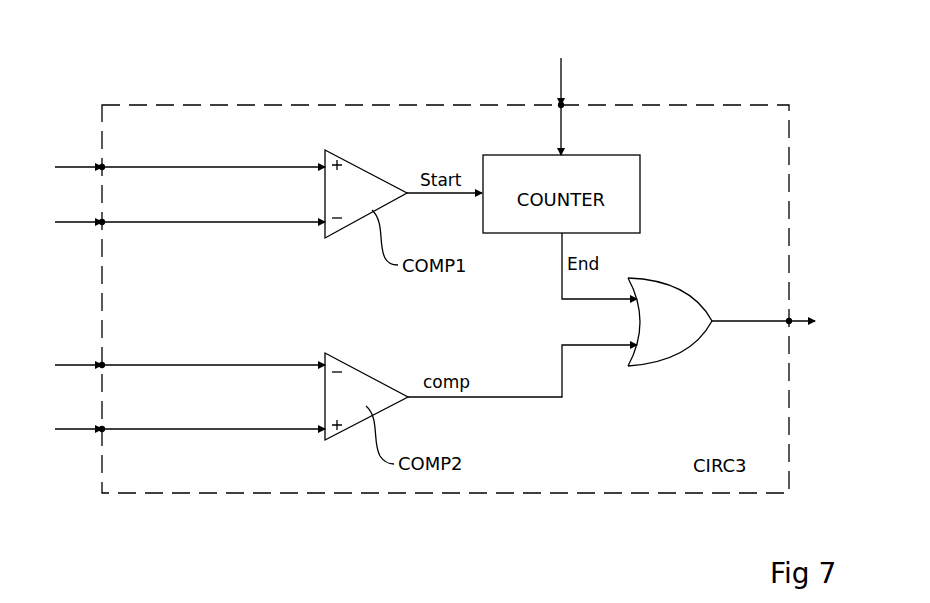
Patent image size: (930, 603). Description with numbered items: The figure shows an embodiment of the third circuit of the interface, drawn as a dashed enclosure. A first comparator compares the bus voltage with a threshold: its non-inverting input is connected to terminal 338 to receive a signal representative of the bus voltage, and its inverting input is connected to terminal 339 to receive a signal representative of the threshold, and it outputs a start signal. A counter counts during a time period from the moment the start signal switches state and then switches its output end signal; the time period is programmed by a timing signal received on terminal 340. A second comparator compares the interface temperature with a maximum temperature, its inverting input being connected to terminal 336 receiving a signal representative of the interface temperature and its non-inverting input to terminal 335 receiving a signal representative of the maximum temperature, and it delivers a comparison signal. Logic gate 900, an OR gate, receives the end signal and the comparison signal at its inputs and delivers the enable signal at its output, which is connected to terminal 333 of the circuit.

The terminal 338 is at (104, 166).
The terminal 339 is at (104, 221).
The terminal 336 is at (104, 364).
The terminal 335 is at (104, 428).
The terminal 340 is at (563, 104).
The logic gate 900 is at (672, 300).
The terminal 333 is at (787, 323).